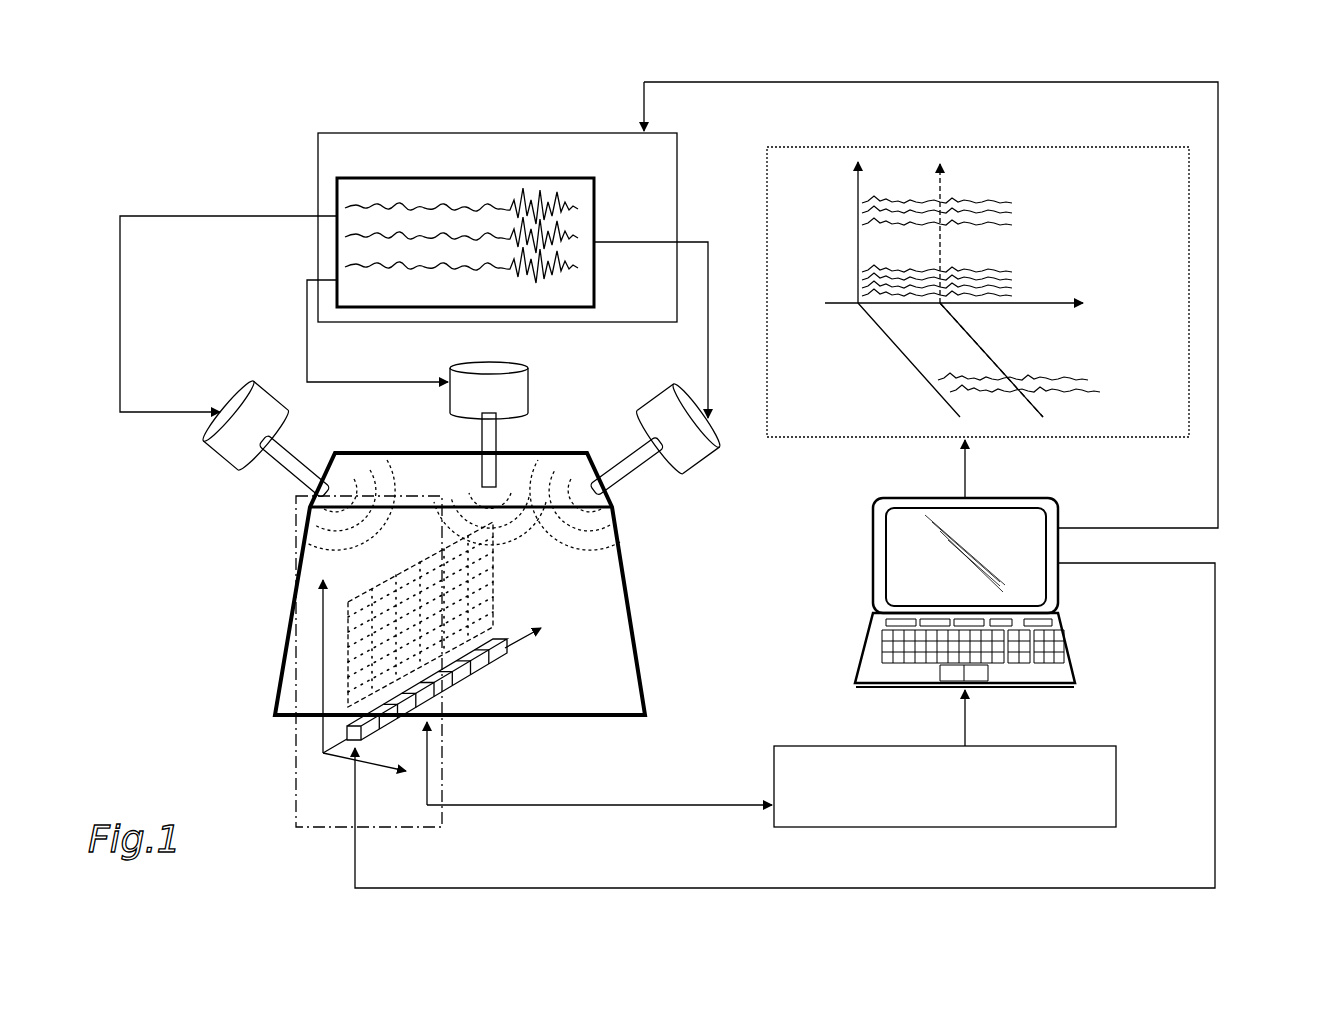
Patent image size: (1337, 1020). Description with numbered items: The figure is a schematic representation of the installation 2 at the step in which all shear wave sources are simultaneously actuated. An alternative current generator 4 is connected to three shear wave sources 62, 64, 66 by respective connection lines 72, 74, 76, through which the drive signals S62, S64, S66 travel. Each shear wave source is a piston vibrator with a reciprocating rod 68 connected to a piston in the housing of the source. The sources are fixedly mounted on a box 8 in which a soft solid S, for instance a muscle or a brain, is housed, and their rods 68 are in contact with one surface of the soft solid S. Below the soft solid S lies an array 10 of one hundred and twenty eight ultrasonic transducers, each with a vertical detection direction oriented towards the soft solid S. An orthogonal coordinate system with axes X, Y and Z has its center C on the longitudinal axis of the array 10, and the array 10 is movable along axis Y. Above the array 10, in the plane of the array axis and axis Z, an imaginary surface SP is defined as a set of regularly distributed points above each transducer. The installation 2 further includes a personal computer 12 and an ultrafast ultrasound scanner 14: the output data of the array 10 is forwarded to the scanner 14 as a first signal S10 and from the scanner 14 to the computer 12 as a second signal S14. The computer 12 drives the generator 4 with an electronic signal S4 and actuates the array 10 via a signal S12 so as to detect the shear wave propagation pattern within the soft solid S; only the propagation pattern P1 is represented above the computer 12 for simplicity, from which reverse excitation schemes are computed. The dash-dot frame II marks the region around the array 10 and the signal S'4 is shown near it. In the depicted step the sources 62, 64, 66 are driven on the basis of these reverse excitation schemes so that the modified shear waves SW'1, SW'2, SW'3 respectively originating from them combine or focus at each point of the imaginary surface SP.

The installation 2 is at (1242, 114).
The alternative current generator 4 is at (430, 133).
The box 8 is at (290, 628).
The array of ultrasonic transducers 10 is at (345, 734).
The personal computer 12 is at (857, 658).
The ultrafast ultrasound scanner 14 is at (945, 758).
The shear wave source 62 is at (215, 440).
The shear wave source 64 is at (496, 372).
The shear wave source 66 is at (671, 408).
The reciprocating rod 68 is at (300, 466).
The connection line 72 is at (120, 318).
The connection line 74 is at (307, 336).
The connection line 76 is at (708, 288).
The electronic signal S4 is at (663, 111).
The drive signal S62 is at (202, 397).
The drive signal S64 is at (429, 368).
The drive signal S66 is at (732, 419).
The soft solid S is at (562, 433).
The modified shear wave SW'1 is at (374, 504).
The modified shear wave SW'2 is at (509, 543).
The modified shear wave SW'3 is at (609, 505).
The imaginary surface SP is at (410, 580).
The detail region II is at (296, 762).
The center of the orthogonal coordinate system C is at (437, 680).
The second signal S12 is at (581, 763).
The synchronisation signal S'4 is at (333, 855).
The first signal S10 is at (741, 826).
The second signal S14 is at (991, 715).
The propagation pattern P1 is at (1190, 358).